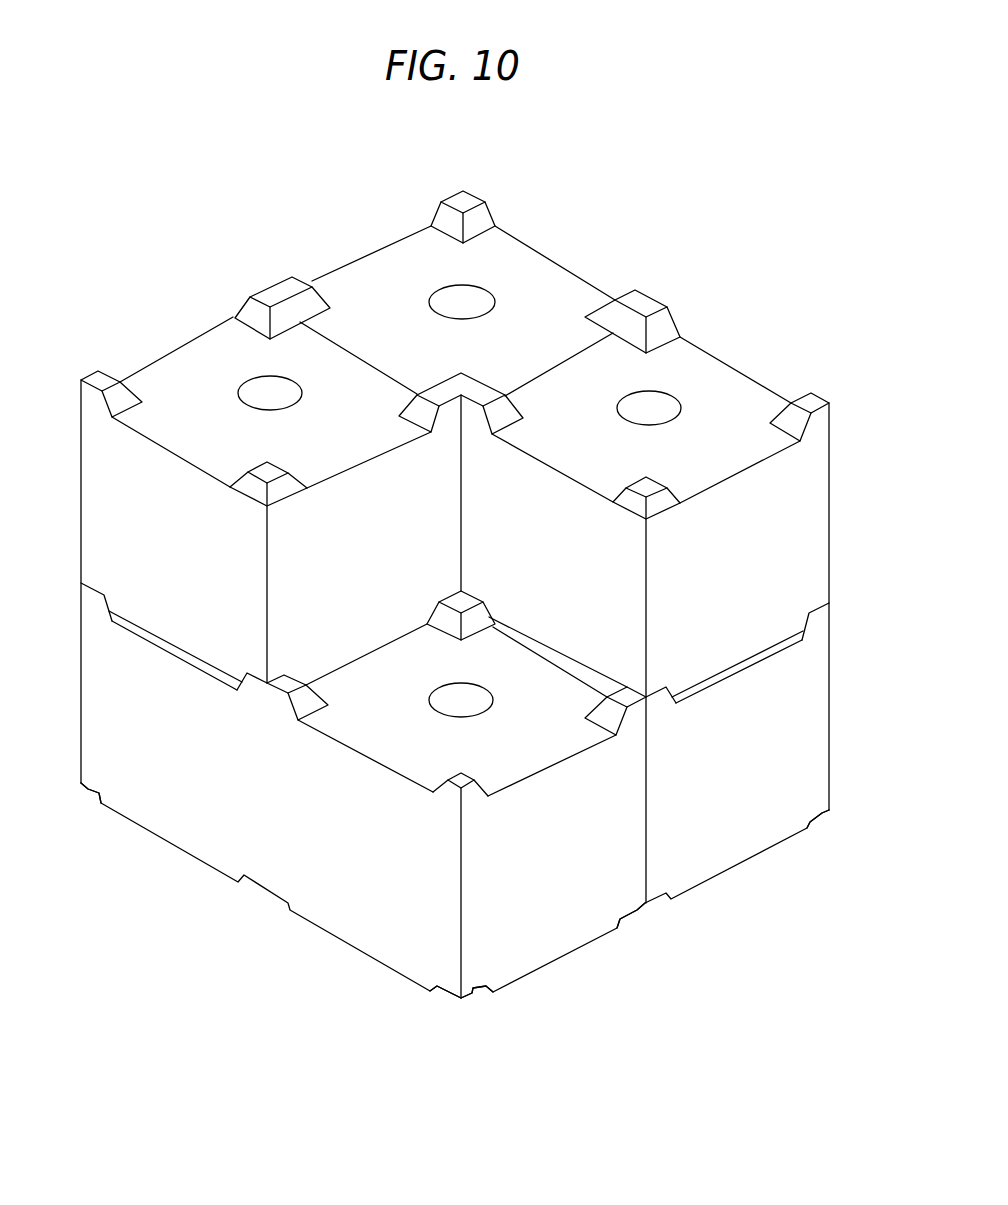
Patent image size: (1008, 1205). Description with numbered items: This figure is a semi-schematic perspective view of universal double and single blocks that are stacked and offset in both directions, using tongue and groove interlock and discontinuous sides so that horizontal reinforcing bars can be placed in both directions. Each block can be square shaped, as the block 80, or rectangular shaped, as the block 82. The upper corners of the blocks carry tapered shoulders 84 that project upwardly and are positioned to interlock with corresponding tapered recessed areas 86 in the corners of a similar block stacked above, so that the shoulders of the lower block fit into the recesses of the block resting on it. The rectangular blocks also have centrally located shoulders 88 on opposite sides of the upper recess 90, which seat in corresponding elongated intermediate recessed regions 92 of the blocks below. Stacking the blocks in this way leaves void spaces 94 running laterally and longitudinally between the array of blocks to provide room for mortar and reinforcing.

The block 80 is at (763, 563).
The block 82 is at (193, 553).
The tapered shoulders 84 is at (98, 380).
The tapered recessed areas 86 is at (88, 792).
The centrally located shoulders 88 is at (279, 292).
The upper recess 90 is at (532, 270).
The elongated intermediate recessed regions 92 is at (267, 888).
The void spaces 94 is at (182, 655).